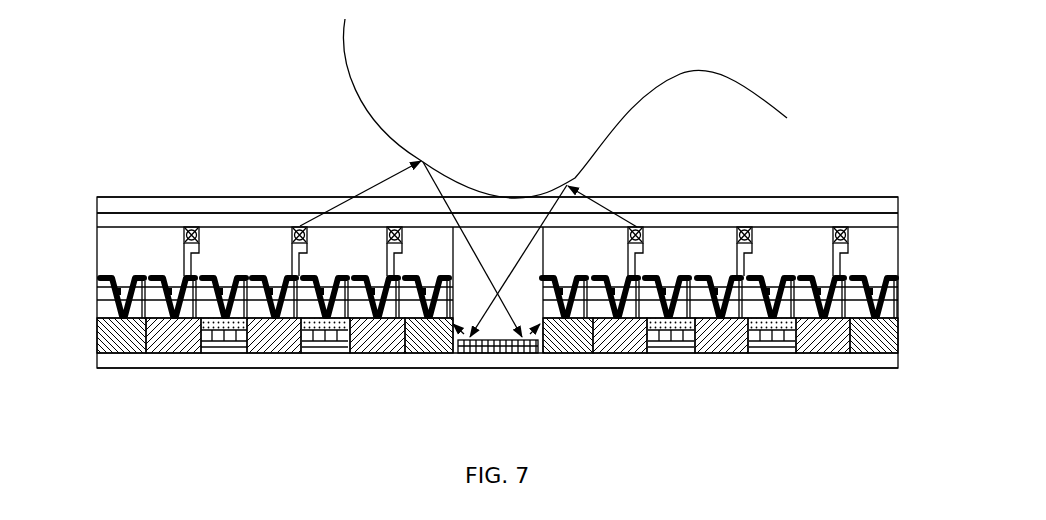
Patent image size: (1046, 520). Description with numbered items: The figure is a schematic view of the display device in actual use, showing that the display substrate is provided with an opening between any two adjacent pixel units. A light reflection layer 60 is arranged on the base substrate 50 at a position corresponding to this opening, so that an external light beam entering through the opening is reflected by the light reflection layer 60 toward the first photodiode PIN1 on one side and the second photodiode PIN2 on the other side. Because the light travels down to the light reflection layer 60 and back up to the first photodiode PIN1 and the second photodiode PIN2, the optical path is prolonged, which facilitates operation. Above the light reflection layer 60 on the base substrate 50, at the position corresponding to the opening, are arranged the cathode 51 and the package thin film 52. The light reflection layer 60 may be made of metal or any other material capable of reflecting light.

The base substrate 50 is at (370, 362).
The cathode 51 is at (815, 220).
The package thin film 52 is at (867, 208).
The light reflection layer 60 is at (502, 353).
The first photodiode PIN1 is at (433, 337).
The second photodiode PIN2 is at (573, 337).